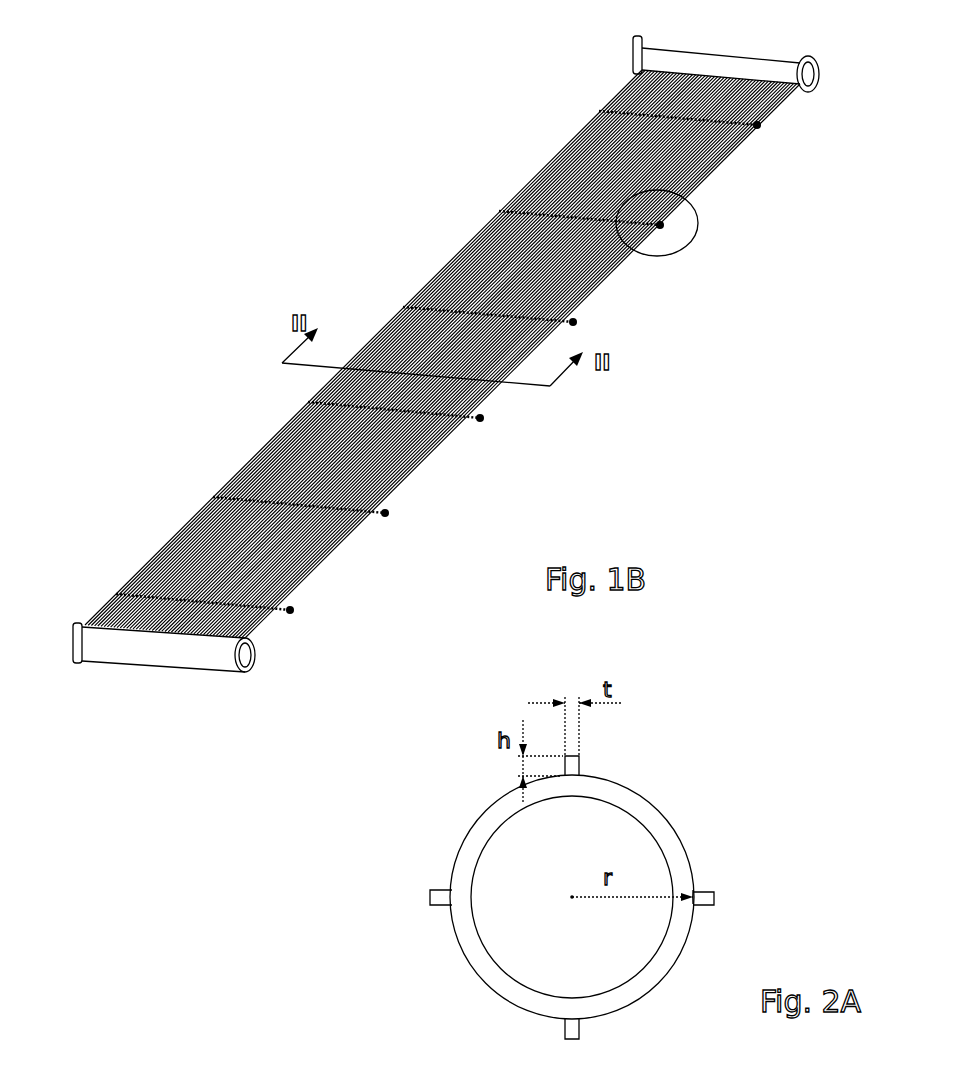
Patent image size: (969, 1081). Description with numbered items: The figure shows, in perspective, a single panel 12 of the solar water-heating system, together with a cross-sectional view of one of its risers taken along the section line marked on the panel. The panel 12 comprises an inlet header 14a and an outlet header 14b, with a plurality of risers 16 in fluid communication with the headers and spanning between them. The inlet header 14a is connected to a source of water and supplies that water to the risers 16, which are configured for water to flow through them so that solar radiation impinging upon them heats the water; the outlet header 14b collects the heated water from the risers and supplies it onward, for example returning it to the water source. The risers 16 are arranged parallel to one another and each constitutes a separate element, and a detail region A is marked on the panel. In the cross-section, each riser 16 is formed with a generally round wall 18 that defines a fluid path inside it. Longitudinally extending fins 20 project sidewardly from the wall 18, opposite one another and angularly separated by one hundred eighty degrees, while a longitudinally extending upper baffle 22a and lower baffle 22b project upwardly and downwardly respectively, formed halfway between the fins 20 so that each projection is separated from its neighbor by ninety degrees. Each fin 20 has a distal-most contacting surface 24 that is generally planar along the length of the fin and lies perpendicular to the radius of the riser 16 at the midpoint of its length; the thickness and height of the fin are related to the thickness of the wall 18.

In FIG. 1B, the panel 12 is at (296, 208).
In FIG. 1B, the inlet header 14a is at (135, 648).
In FIG. 1B, the outlet header 14b is at (716, 58).
In FIG. 1B, the riser 16 is at (325, 572).
In FIG. 2A, the riser 16 is at (577, 892).
In FIG. 1B, the detail region A is at (695, 235).
In FIG. 2A, the wall 18 is at (673, 857).
In FIG. 2A, the fin 20 is at (704, 907).
In FIG. 2A, the upper baffle 22a is at (582, 768).
In FIG. 2A, the lower baffle 22b is at (582, 1032).
In FIG. 2A, the contacting surface 24 is at (716, 896).